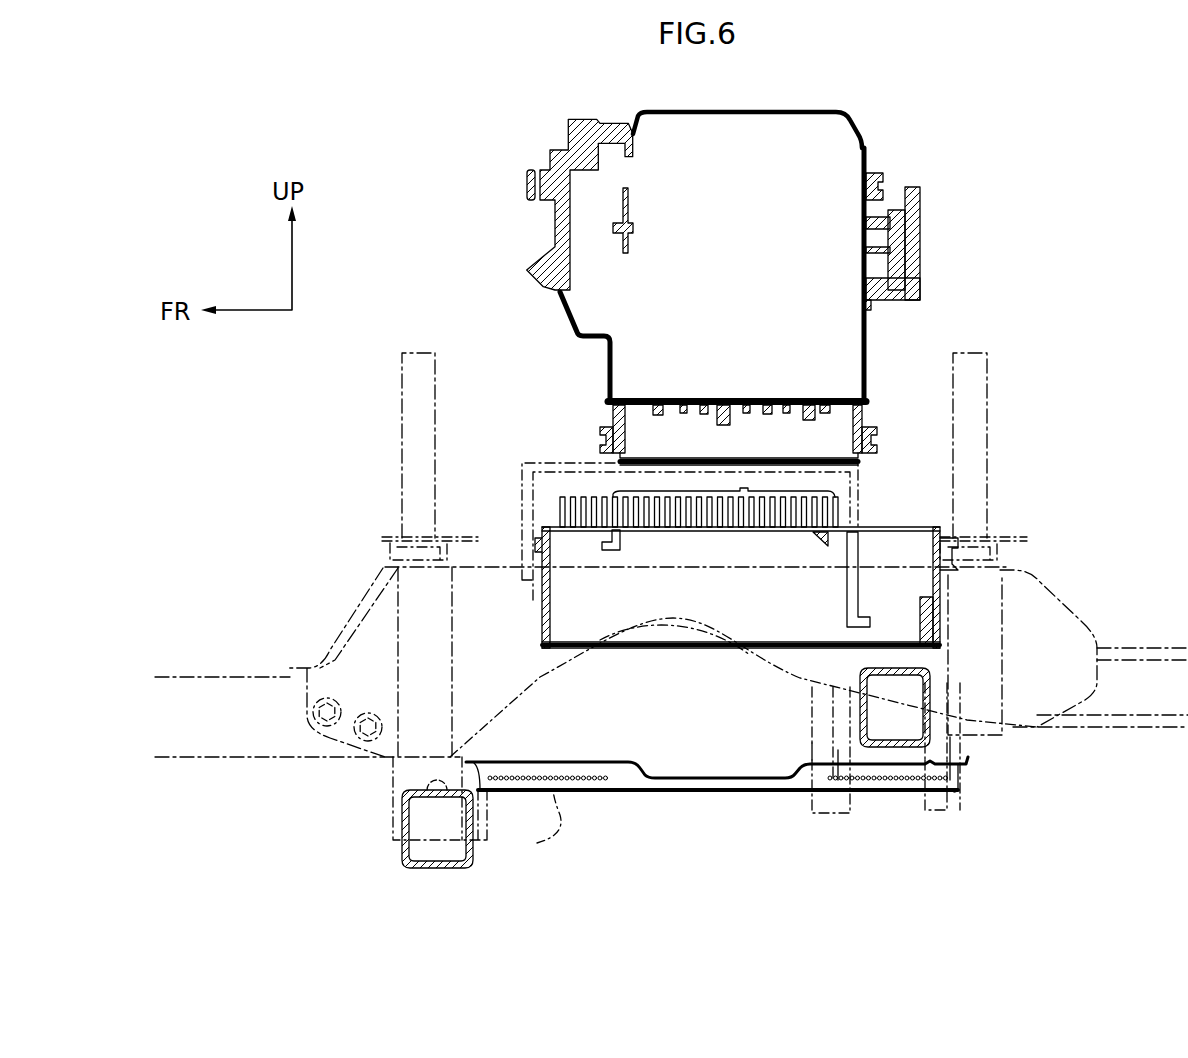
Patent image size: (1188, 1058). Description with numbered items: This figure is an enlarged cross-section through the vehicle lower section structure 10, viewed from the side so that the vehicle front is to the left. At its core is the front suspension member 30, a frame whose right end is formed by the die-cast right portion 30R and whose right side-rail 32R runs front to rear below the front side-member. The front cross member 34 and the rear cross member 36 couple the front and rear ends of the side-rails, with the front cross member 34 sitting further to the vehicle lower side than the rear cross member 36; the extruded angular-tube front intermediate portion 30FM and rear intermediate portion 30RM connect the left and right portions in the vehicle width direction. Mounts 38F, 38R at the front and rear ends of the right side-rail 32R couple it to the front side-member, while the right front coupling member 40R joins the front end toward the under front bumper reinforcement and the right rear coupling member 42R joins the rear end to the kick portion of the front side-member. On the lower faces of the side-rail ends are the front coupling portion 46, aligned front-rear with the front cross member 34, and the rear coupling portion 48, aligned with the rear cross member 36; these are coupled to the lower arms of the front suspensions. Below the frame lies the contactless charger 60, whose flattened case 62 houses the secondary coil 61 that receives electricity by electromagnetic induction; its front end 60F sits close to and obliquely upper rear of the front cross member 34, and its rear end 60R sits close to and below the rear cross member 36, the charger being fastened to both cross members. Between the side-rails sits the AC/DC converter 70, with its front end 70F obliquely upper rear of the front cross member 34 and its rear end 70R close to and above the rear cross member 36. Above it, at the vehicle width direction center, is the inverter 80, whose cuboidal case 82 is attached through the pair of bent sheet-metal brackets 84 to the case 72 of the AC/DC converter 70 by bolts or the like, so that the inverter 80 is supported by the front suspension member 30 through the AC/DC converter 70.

The vehicle lower section structure 10 is at (1046, 234).
The front suspension member 30 is at (343, 518).
The right portion 30R is at (333, 620).
The rear intermediate portion 30RM is at (933, 677).
The front intermediate portion 30FM is at (403, 820).
The right side-rail 32R is at (693, 620).
The front cross member 34 is at (401, 857).
The rear cross member 36 is at (935, 704).
The front mount 38F is at (402, 417).
The rear mount 38R is at (988, 438).
The right front coupling member 40R is at (217, 677).
The right rear coupling member 42R is at (1158, 648).
The front coupling portion 46 is at (547, 840).
The rear coupling portion 48 is at (933, 807).
The contactless charger 60 is at (674, 798).
The front end of contactless charger 60F is at (507, 793).
The rear end of contactless charger 60R is at (885, 795).
The secondary coil 61 is at (582, 795).
The case 62 is at (743, 797).
The AC/DC converter 70 is at (628, 652).
The front end of AC/DC converter 70F is at (546, 527).
The rear end of AC/DC converter 70R is at (900, 520).
The case of AC/DC converter 72 is at (737, 650).
The inverter 80 is at (863, 133).
The case of inverter 82 is at (867, 331).
The bracket 84 is at (568, 462).